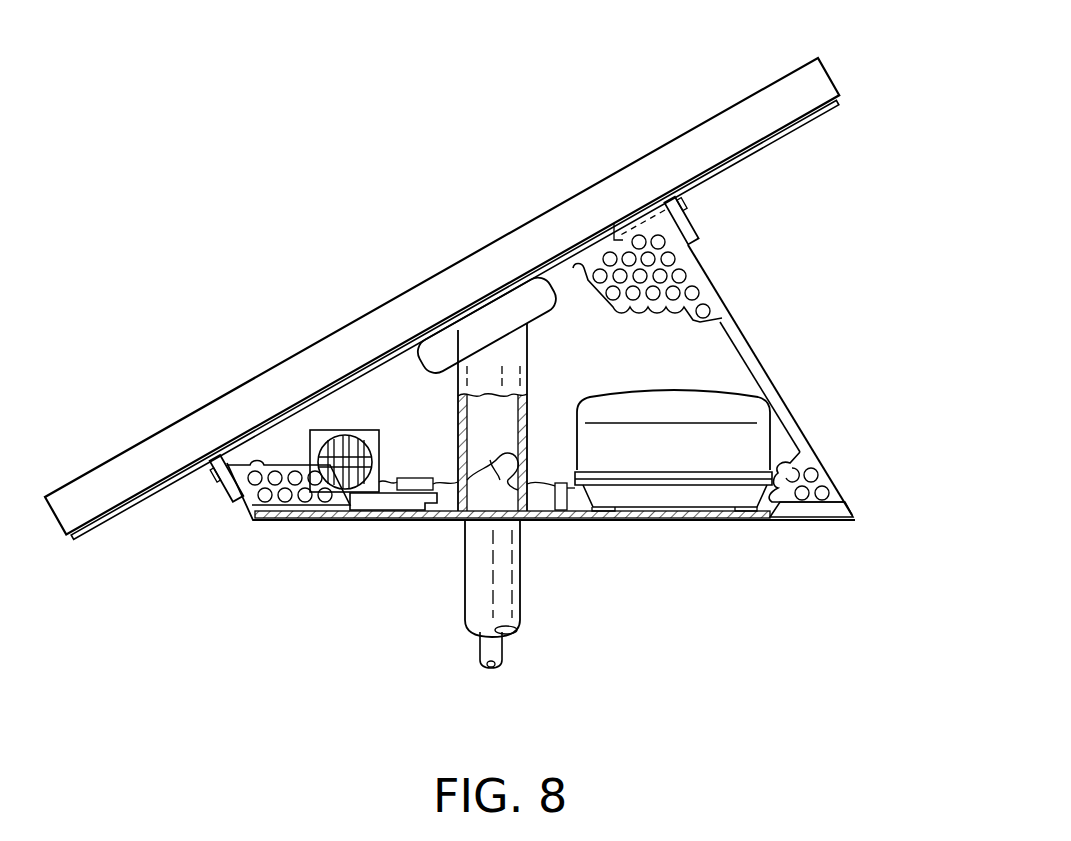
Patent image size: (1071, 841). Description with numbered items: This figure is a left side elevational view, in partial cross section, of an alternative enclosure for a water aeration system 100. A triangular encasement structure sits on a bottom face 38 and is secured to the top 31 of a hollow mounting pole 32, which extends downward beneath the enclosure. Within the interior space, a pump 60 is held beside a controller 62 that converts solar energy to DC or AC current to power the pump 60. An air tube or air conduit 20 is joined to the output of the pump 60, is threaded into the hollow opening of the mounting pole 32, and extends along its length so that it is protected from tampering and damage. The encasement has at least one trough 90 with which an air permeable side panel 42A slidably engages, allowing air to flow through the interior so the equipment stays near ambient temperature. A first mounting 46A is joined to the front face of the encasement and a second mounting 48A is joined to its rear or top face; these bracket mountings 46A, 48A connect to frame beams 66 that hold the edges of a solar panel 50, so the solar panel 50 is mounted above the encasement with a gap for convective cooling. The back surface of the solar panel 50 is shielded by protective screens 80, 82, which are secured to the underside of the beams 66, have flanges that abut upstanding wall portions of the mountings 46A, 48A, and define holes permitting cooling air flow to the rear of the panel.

The water aeration system 100 is at (183, 362).
The solar panel 50 is at (753, 94).
The frame beam 66 is at (817, 90).
The protective screen 80 is at (802, 126).
The protective screen 82 is at (92, 534).
The top of mounting pole 31 is at (457, 342).
The first mounting 46A is at (227, 494).
The second mounting 48A is at (690, 232).
The side panel 42A is at (693, 277).
The trough 90 is at (287, 513).
The bottom face 38 is at (752, 514).
The controller 62 is at (367, 487).
The mounting pole 32 is at (500, 569).
The air conduit 20 is at (493, 655).
The pump 60 is at (677, 450).